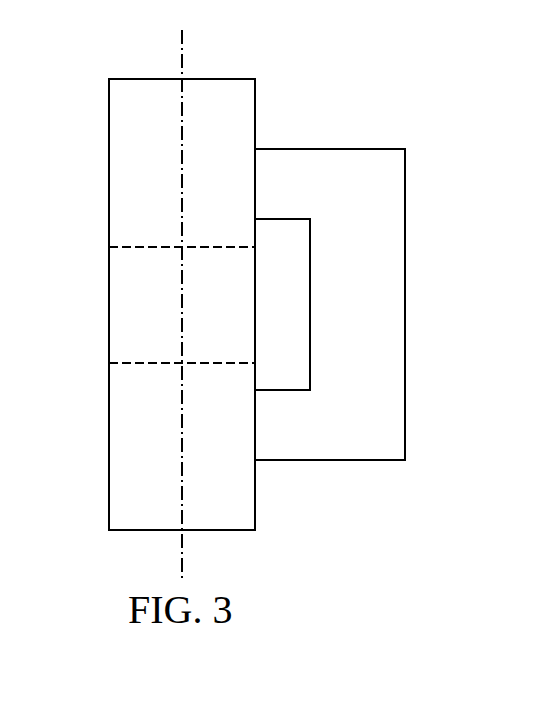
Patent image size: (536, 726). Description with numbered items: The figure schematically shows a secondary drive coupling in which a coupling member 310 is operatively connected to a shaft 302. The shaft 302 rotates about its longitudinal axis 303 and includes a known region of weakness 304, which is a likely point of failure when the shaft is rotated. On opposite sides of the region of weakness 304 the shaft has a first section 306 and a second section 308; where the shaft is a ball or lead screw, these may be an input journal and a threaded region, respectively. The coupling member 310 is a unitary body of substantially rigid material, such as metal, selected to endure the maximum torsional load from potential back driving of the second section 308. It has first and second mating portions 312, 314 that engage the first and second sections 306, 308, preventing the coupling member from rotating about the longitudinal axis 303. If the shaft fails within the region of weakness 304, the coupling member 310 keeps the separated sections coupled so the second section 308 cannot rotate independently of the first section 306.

The shaft 302 is at (109, 108).
The longitudinal axis 303 is at (181, 43).
The region of weakness 304 is at (171, 312).
The first section 306 is at (116, 193).
The second section 308 is at (116, 455).
The coupling member 310 is at (406, 304).
The first mating portion 312 is at (331, 158).
The second mating portion 314 is at (279, 440).